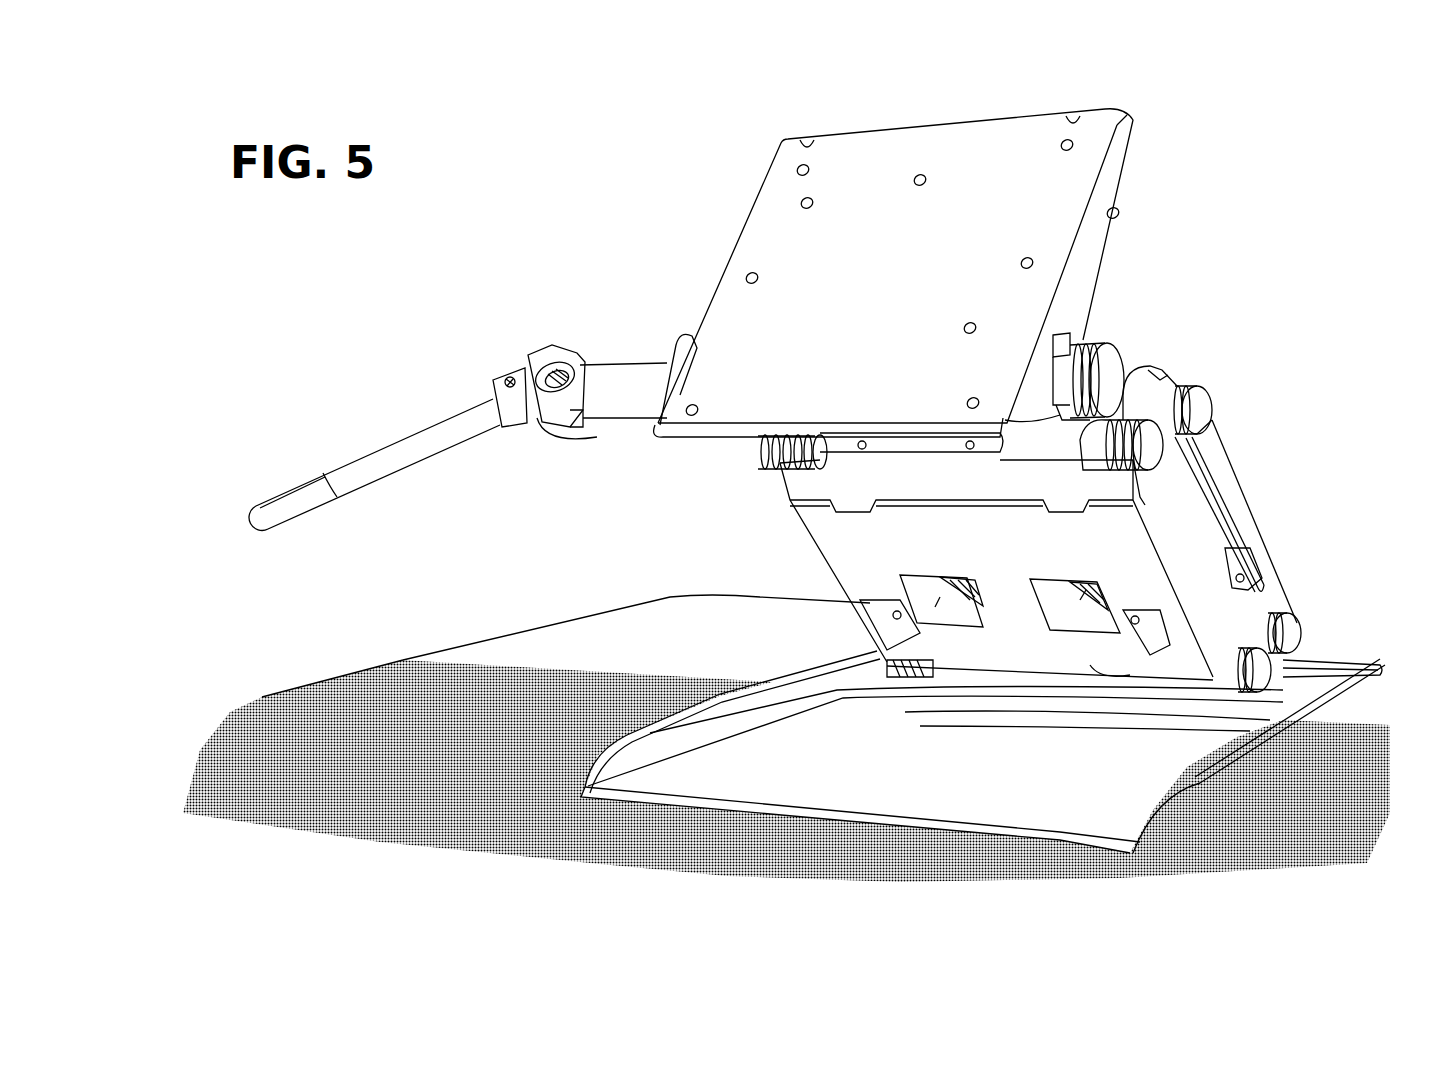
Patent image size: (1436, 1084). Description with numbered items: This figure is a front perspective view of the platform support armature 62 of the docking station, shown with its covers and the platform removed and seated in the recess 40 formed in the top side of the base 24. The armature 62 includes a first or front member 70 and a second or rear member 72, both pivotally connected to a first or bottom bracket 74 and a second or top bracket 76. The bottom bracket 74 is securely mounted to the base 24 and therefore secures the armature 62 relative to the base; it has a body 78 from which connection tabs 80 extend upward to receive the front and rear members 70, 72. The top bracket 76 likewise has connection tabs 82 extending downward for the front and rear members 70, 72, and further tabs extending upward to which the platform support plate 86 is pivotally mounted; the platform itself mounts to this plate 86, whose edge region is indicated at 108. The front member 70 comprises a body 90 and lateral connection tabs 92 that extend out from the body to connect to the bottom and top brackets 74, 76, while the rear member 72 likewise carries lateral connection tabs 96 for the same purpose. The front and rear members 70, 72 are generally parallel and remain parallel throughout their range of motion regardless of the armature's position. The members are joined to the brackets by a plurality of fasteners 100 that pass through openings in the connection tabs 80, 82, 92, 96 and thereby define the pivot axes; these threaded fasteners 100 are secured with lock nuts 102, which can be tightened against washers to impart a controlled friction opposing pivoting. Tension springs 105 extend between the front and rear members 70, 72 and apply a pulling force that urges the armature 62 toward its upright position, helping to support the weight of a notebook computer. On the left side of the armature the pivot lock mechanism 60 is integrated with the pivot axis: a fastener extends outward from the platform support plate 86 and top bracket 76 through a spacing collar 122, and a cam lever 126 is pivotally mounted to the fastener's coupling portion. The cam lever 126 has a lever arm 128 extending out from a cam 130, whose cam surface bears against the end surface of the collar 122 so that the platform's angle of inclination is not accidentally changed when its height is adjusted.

The base 24 is at (540, 618).
The recess 40 is at (803, 722).
The pivot lock mechanism 60 is at (527, 306).
The platform support armature 62 is at (1250, 278).
The front member 70 is at (783, 529).
The rear member 72 is at (1250, 484).
The bottom bracket 74 is at (1295, 700).
The top bracket 76 is at (1153, 358).
The body 78 is at (1037, 677).
The connection tabs 80 is at (1305, 670).
The connection tabs 82 is at (1160, 380).
The platform support plate 86 is at (738, 192).
The body 90 is at (1117, 670).
The lateral connection tabs 92 is at (1135, 495).
The lateral connection tabs 96 is at (1250, 530).
The fasteners 100 is at (1205, 408).
The lock nuts 102 is at (810, 462).
The tension springs 105 is at (935, 607).
The plate edge 108 is at (1105, 245).
The spacing collar 122 is at (632, 367).
The cam lever 126 is at (363, 400).
The lever arm 128 is at (360, 466).
The cam 130 is at (545, 432).